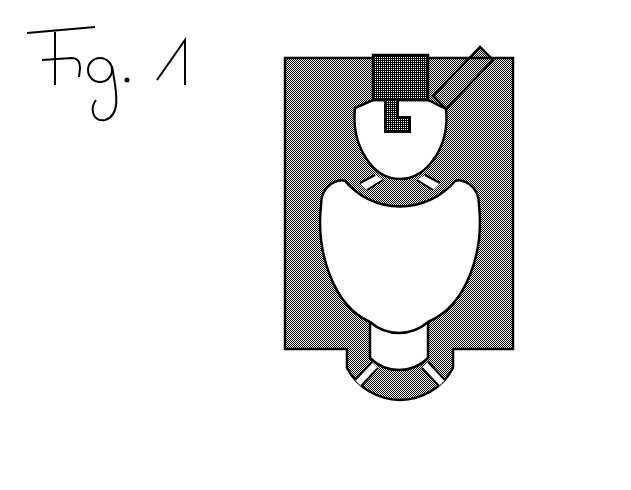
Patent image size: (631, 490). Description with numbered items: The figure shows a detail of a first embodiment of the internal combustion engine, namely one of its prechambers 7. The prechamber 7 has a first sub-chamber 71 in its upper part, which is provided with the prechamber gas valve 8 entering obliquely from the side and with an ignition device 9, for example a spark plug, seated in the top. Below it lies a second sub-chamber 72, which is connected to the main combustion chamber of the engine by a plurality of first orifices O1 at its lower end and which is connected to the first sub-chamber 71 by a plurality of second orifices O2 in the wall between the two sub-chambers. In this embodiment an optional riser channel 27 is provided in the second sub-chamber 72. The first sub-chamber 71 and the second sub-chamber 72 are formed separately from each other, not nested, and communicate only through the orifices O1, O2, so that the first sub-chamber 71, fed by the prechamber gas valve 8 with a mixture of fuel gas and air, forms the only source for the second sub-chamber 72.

The prechamber 7 is at (528, 210).
The prechamber gas valve 8 is at (478, 75).
The ignition device 9 is at (392, 82).
The first sub-chamber 71 is at (388, 157).
The second sub-chamber 72 is at (350, 258).
The riser channel 27 is at (400, 348).
The first orifices O1 is at (360, 383).
The second orifices O2 is at (362, 192).